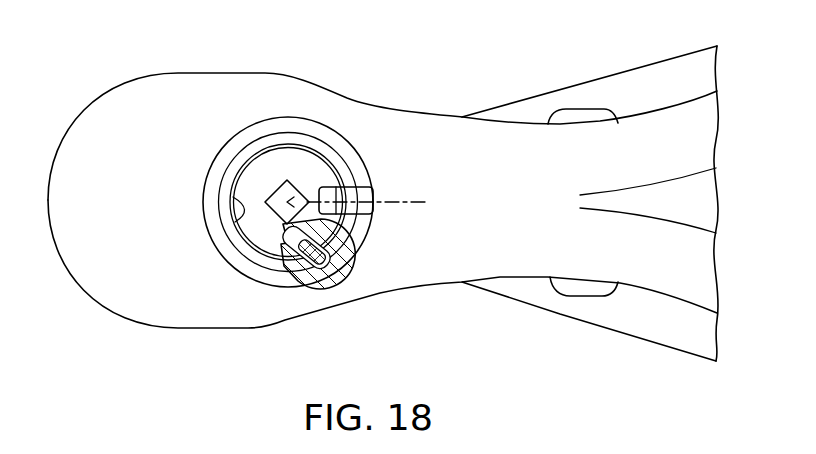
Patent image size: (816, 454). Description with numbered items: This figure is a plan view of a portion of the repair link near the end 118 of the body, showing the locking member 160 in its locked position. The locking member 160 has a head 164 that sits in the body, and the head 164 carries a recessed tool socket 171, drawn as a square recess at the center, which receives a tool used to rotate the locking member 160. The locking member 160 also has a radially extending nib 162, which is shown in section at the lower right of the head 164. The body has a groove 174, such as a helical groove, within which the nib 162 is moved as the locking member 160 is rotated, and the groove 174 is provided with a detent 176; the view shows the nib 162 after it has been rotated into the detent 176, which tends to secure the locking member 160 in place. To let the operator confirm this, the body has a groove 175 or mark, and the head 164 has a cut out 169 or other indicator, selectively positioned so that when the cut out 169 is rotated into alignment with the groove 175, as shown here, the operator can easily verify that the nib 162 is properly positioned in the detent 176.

The end 118 is at (53, 143).
The locking member 160 is at (248, 182).
The recessed tool socket 171 is at (285, 180).
The cut out 169 is at (329, 187).
The groove 175 is at (363, 187).
The groove 174 is at (244, 243).
The head 164 is at (264, 240).
The detent 176 is at (295, 281).
The nib 162 is at (337, 290).